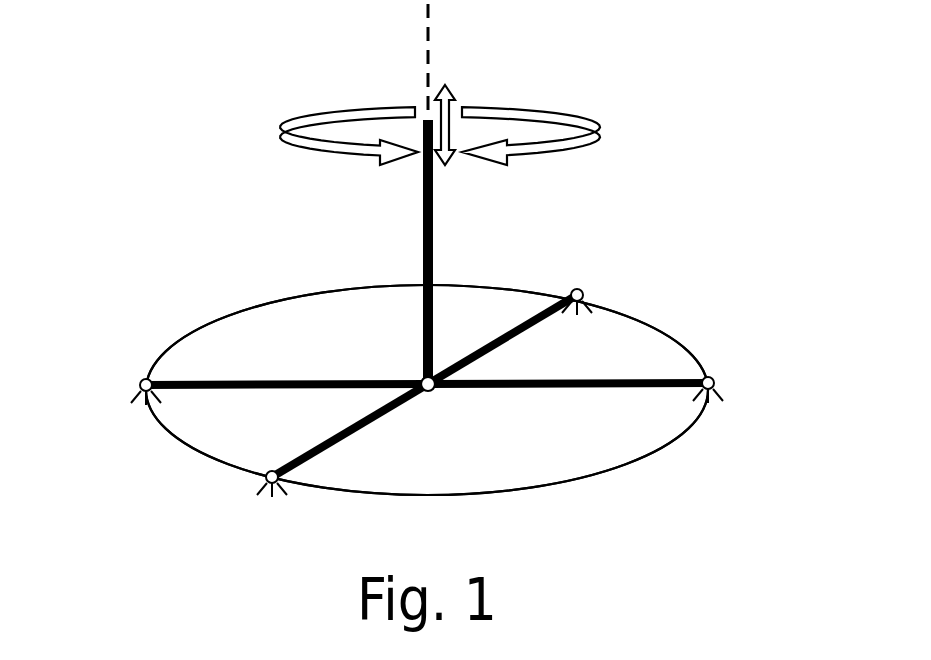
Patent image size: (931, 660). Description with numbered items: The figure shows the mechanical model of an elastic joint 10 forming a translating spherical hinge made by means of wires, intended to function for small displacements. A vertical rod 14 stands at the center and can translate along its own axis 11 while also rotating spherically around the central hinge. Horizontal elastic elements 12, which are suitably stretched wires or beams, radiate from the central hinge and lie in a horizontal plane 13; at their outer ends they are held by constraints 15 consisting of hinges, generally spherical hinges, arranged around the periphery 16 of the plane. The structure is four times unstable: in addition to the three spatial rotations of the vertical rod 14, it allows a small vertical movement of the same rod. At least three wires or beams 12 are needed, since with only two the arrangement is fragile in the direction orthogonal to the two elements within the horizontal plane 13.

The antenna arrangement 10 is at (427, 276).
The axis 11 is at (431, 53).
The horizontal elastic elements 12 is at (508, 328).
The horizontal plane 13 is at (530, 448).
The vertical rod 14 is at (435, 220).
The constraints 15 is at (427, 386).
The circular rim / ring 16 is at (658, 448).